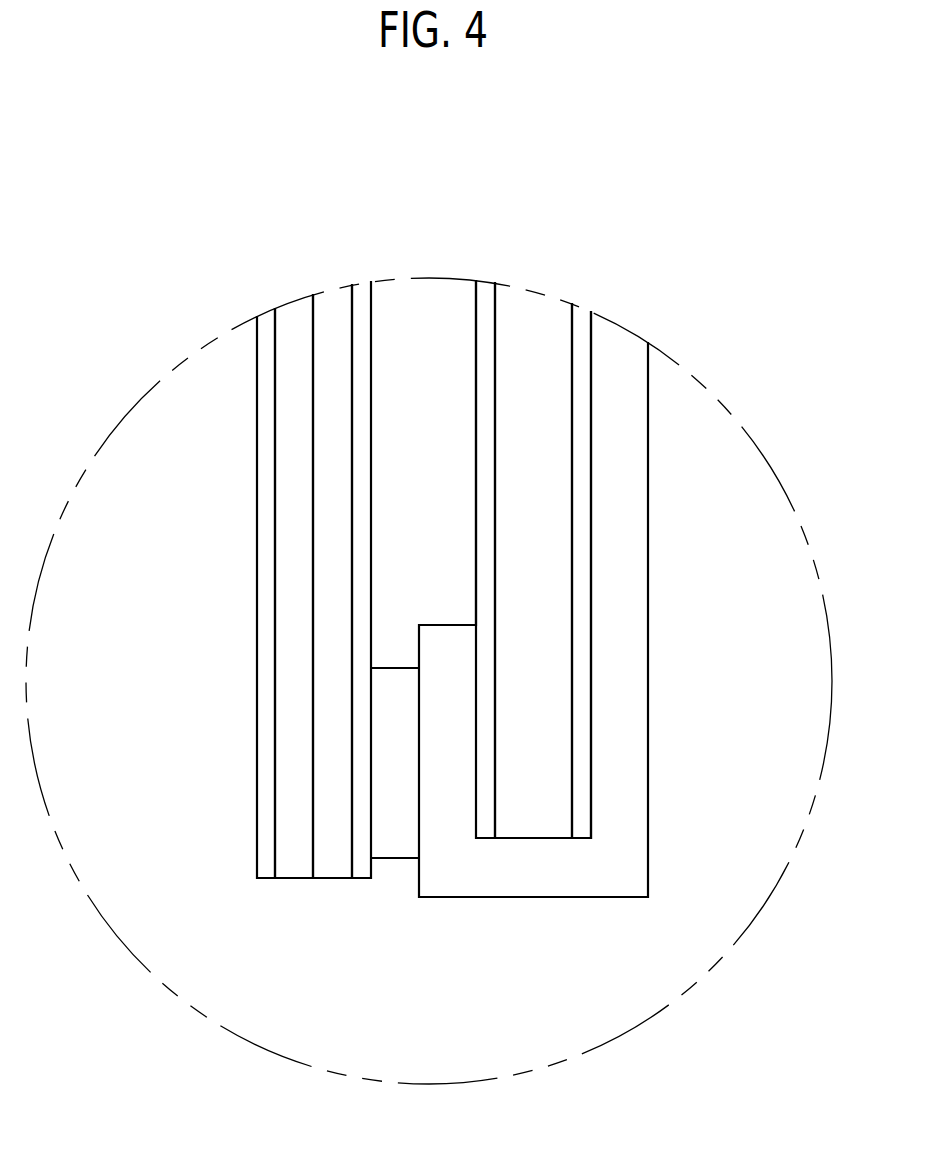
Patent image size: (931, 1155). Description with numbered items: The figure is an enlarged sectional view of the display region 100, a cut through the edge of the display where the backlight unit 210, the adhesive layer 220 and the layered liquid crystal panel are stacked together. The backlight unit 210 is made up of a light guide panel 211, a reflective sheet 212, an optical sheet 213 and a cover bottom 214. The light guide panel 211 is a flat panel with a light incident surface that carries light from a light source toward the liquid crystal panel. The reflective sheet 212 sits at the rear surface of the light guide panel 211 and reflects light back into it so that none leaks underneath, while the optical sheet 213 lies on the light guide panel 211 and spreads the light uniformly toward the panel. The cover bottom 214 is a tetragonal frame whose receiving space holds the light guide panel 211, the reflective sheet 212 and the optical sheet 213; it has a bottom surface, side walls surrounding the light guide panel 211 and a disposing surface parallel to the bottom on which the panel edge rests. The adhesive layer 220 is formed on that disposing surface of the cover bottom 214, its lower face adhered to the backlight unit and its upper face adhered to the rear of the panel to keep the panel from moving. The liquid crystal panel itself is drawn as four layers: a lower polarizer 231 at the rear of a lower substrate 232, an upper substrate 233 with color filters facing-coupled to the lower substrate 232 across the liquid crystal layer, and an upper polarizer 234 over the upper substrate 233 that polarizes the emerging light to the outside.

The first electrode assembly 100 is at (309, 516).
The lower polarizer 231 is at (372, 542).
The lower substrate 232 is at (333, 327).
The upper substrate 233 is at (297, 332).
The upper polarizer 234 is at (267, 338).
The adhesive layer 220 is at (388, 819).
The backlight unit 210 is at (533, 661).
The light guide panel 211 is at (543, 822).
The reflective sheet 212 is at (583, 823).
The optical sheet 213 is at (485, 832).
The cover bottom 214 is at (447, 874).